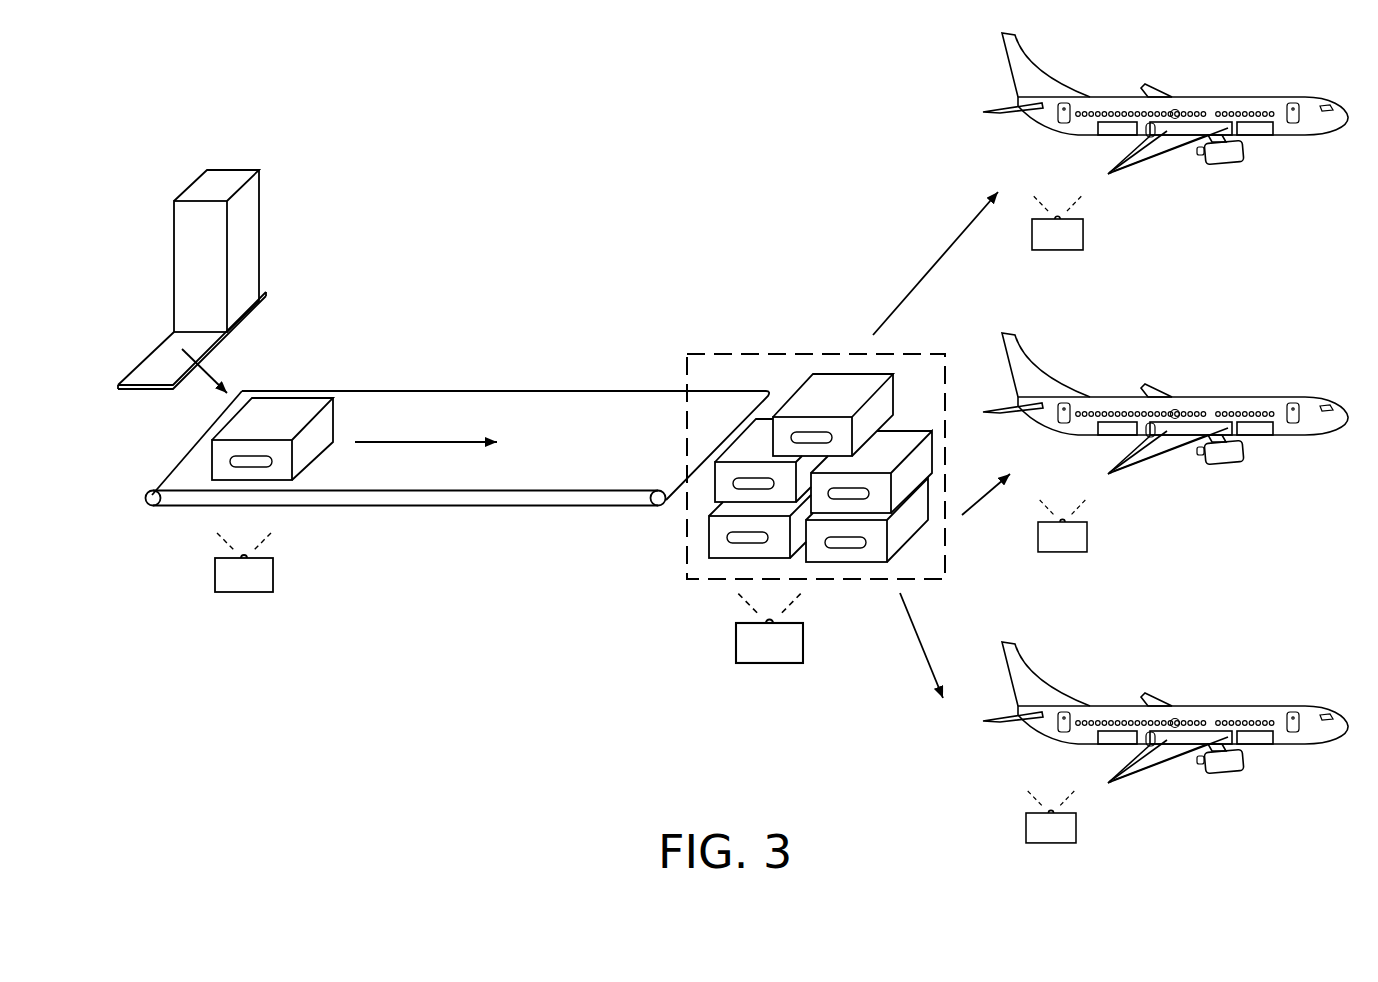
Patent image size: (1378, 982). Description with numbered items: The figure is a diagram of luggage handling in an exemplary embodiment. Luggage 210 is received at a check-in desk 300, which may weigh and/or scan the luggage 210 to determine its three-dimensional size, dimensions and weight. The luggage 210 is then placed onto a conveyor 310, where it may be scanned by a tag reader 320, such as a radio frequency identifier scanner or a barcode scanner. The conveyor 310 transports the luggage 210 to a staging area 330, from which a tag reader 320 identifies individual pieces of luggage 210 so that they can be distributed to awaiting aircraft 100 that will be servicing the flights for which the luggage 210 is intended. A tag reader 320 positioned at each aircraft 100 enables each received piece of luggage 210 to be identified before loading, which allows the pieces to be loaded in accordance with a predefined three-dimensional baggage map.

The aircraft 100 is at (1258, 96).
The luggage 210 is at (220, 420).
The check-in desk 300 is at (223, 172).
The conveyor 310 is at (400, 393).
The tag reader 320 is at (215, 587).
The staging area 330 is at (747, 355).